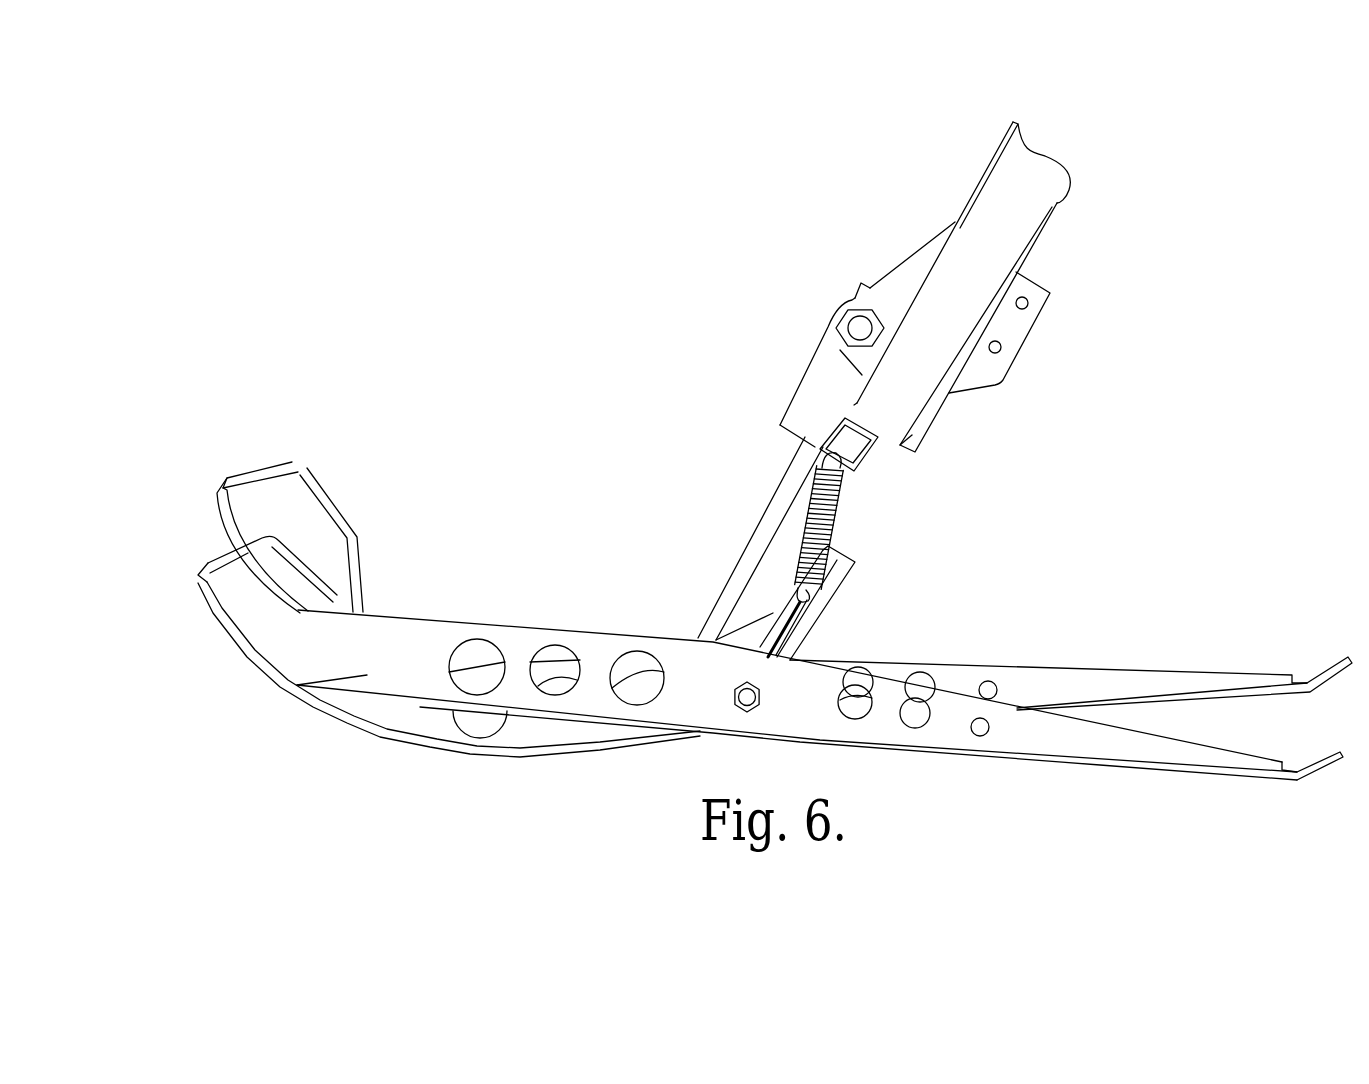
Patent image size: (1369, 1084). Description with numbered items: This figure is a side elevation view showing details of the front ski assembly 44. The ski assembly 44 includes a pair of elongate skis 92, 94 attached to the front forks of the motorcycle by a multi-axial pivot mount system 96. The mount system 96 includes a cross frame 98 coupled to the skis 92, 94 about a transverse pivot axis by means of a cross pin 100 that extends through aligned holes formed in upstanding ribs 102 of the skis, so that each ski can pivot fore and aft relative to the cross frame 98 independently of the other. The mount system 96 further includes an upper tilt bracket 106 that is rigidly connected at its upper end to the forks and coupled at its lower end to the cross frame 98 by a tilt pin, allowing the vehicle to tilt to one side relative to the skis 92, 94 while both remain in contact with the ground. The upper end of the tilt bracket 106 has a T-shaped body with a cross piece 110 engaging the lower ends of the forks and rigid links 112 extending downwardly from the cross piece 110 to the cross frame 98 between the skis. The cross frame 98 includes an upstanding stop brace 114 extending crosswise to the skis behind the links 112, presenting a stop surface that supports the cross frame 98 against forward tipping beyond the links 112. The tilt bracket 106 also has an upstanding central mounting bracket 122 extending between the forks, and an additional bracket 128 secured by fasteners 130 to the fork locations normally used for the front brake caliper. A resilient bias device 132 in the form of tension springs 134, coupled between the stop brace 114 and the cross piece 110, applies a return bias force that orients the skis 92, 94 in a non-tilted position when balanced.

The ski assembly 44 is at (572, 388).
The elongate ski 92 is at (192, 621).
The elongate ski 94 is at (190, 510).
The multi-axial pivot mount system 96 is at (1085, 276).
The cross frame 98 is at (845, 624).
The cross pin 100 is at (749, 704).
The upstanding rib 102 is at (1042, 680).
The upper tilt bracket 106 is at (800, 332).
The cross piece 110 is at (862, 458).
The rigid link 112 is at (795, 492).
The stop brace 114 is at (837, 592).
The central mounting bracket 122 is at (860, 240).
The additional bracket 128 is at (980, 380).
The fastener 130 is at (1027, 307).
The resilient bias device 132 is at (765, 574).
The tension spring 134 is at (843, 537).